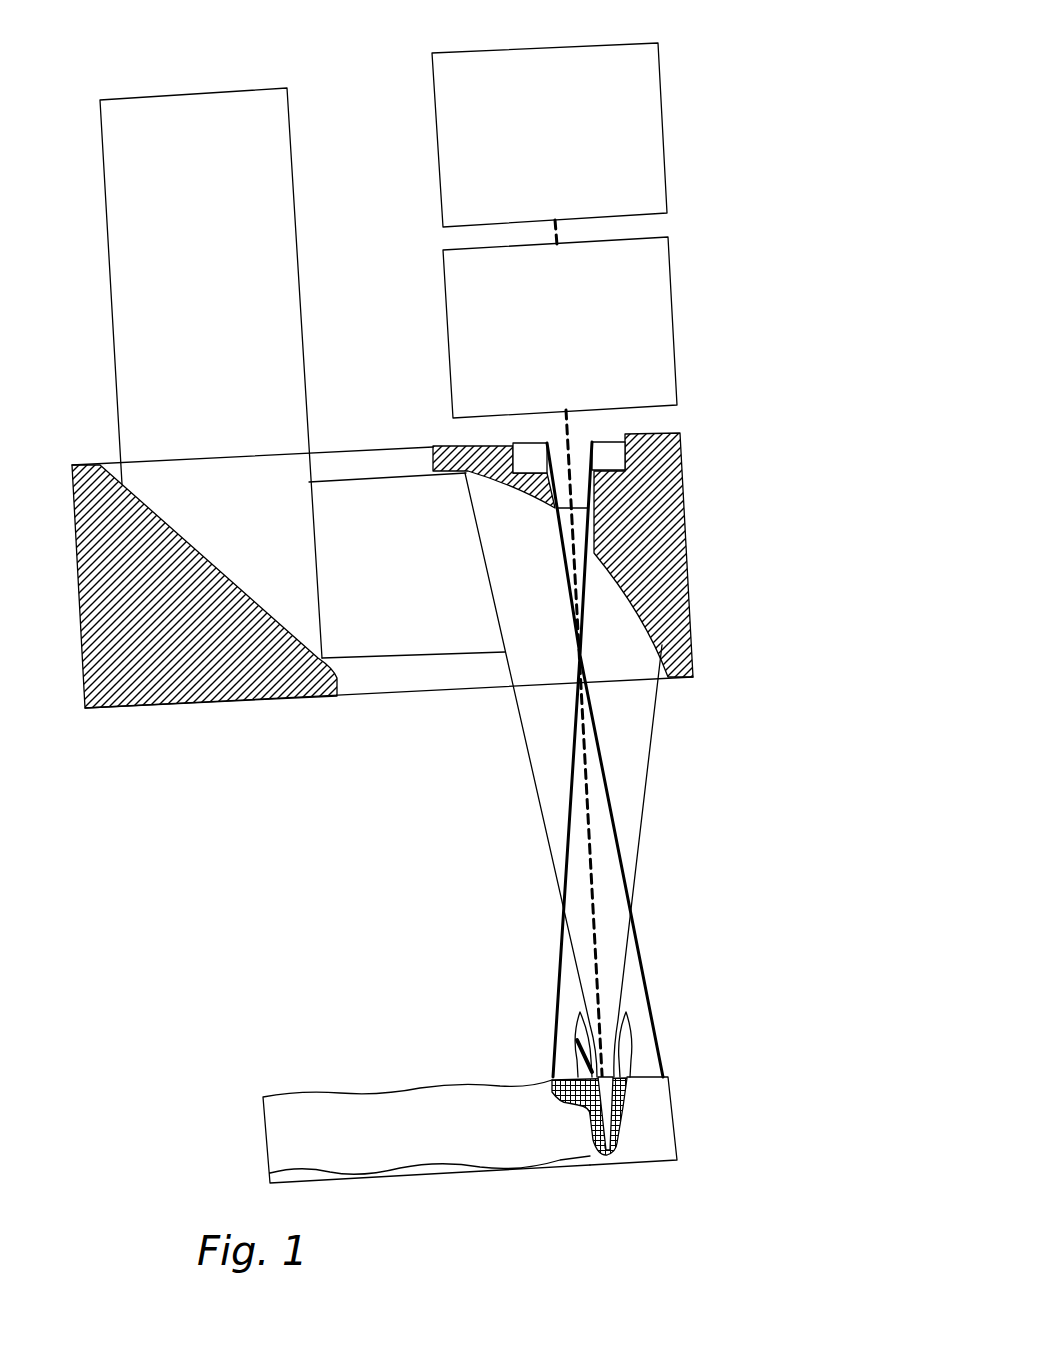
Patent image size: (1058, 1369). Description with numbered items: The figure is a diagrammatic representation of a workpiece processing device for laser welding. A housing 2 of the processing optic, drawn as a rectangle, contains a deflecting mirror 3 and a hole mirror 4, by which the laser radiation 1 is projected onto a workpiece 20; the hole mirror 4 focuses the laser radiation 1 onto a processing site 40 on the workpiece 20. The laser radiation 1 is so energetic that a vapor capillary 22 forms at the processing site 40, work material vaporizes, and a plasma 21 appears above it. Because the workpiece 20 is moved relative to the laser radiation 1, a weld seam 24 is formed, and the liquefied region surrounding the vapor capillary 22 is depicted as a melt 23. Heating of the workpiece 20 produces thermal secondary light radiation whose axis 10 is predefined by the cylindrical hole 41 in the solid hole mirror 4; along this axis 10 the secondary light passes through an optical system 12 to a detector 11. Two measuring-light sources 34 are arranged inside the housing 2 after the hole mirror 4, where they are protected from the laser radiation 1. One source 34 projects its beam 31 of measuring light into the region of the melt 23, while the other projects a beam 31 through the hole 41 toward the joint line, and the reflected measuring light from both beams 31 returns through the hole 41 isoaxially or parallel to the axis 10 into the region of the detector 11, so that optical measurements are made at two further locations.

The laser radiation 1 is at (133, 295).
The housing 2 is at (402, 697).
The deflecting mirror 3 is at (127, 705).
The hole mirror 4 is at (655, 540).
The axis of secondary light radiation 10 is at (605, 757).
The detector 11 is at (650, 115).
The optical system 12 is at (655, 278).
The workpiece 20 is at (647, 1112).
The plasma 21 is at (628, 1038).
The vapor capillary 22 is at (610, 1135).
The melt 23 is at (547, 1082).
The weld seam 24 is at (403, 1130).
The beam of measuring light 31 is at (567, 850).
The measuring-light source 34 is at (608, 450).
The processing site 40 is at (578, 1045).
The hole 41 is at (578, 492).